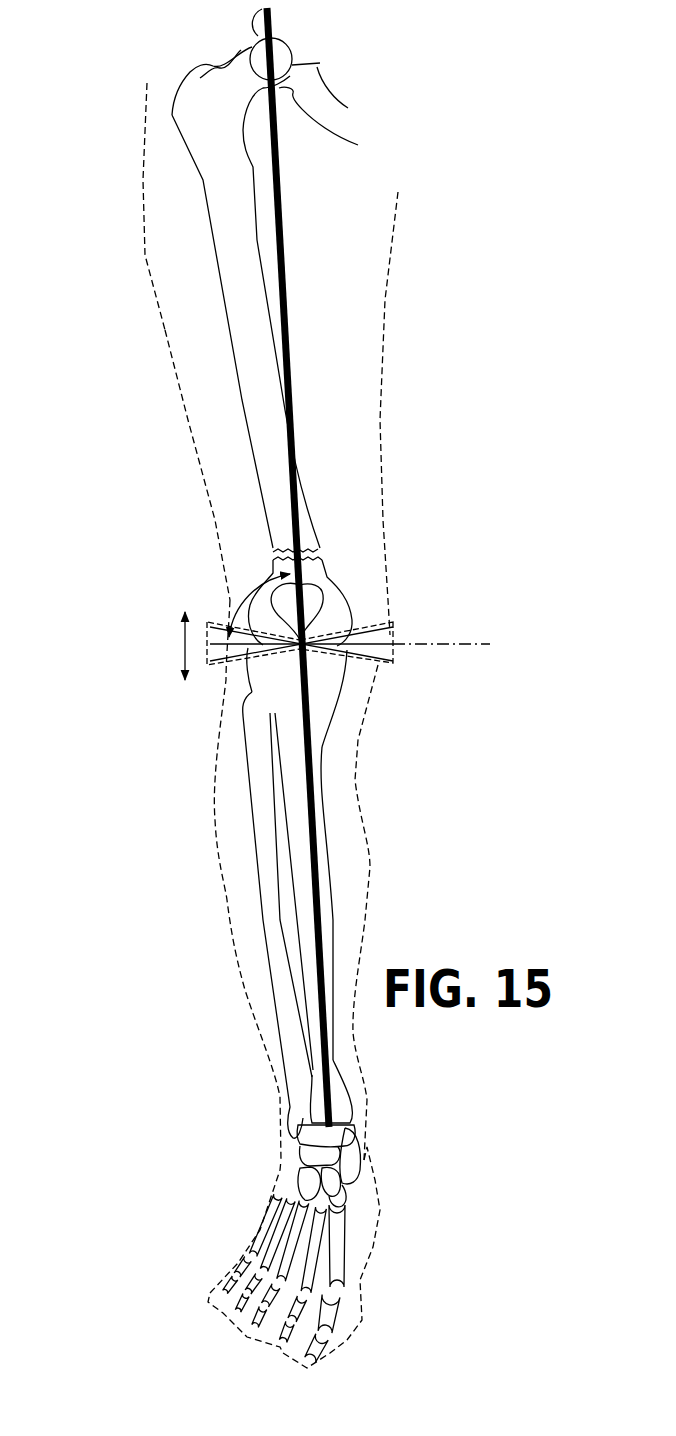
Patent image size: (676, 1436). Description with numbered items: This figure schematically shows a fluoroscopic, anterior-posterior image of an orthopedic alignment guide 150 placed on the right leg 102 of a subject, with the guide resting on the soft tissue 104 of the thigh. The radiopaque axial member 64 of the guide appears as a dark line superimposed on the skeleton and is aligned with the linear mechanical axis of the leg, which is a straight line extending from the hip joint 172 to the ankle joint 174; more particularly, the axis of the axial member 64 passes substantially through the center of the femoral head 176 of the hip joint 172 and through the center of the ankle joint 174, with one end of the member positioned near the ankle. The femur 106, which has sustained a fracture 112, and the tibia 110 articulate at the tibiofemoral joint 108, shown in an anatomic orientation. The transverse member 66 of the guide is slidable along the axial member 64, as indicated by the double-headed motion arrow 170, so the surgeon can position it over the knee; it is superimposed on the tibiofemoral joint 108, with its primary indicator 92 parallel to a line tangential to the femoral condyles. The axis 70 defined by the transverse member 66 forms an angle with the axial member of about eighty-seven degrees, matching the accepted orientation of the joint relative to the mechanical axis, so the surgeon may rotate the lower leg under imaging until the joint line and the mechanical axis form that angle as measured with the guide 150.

The axial member 64 is at (294, 330).
The transverse member 66 is at (365, 620).
The axis 70 is at (447, 641).
The primary indicator 92 is at (377, 648).
The right leg 102 is at (142, 253).
The soft tissue 104 is at (173, 365).
The femur 106 is at (258, 226).
The tibiofemoral joint 108 is at (272, 671).
The tibia 110 is at (333, 882).
The fracture 112 is at (330, 546).
The orthopedic alignment guide 150 is at (250, 355).
The double-headed motion arrow 170 is at (180, 645).
The hip joint 172 is at (235, 26).
The ankle joint 174 is at (368, 1136).
The femoral head 176 is at (243, 48).